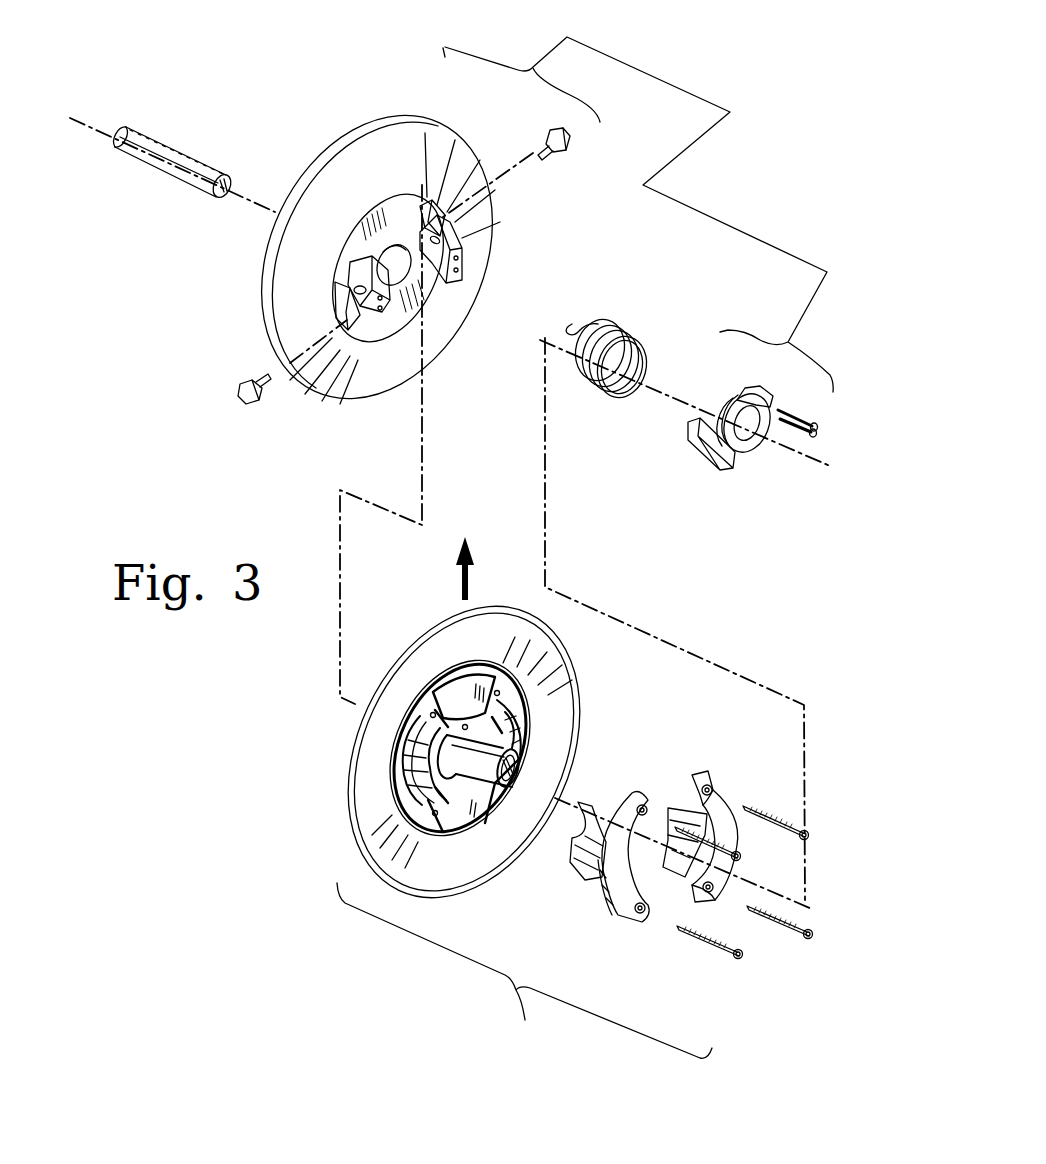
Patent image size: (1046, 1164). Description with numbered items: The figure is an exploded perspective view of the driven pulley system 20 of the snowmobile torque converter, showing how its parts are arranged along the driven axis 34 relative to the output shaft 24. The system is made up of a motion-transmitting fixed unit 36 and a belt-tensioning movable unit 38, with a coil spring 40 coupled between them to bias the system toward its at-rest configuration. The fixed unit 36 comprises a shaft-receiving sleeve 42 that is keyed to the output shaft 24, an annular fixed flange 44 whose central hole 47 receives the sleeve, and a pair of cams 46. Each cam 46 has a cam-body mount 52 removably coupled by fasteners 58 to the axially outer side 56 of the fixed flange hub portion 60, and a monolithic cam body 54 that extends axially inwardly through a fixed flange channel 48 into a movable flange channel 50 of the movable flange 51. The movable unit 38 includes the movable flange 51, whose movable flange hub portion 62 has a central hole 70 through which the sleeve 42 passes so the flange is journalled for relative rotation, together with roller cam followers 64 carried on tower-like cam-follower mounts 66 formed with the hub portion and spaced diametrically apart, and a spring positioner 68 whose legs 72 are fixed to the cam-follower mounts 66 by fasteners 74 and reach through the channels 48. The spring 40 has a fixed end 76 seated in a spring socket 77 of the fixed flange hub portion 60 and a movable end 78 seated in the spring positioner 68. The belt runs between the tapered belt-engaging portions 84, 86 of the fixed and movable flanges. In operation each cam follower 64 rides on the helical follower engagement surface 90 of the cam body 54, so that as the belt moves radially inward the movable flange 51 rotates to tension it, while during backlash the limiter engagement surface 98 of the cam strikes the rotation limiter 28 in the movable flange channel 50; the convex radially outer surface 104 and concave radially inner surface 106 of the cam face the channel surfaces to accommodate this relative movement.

The driven pulley system 20 is at (215, 830).
The output shaft 24 is at (178, 163).
The rotation limiter 28 is at (418, 205).
The driven axis 34 is at (440, 400).
The motion-transmitting fixed unit 36 is at (524, 970).
The belt-tensioning movable unit 38 is at (660, 75).
The coil spring 40 is at (628, 336).
The shaft-receiving sleeve 42 is at (520, 778).
The annular fixed flange 44 is at (463, 752).
The cam 46 is at (667, 847).
The central hole 47 is at (478, 785).
The fixed flange channel 48 is at (522, 745).
The movable flange channel 50 is at (455, 210).
The movable flange 51 is at (337, 122).
The cam-body mount 52 is at (722, 780).
The cam body 54 is at (688, 822).
The axially outer side 56 is at (435, 818).
The fasteners 58 is at (778, 840).
The fixed flange hub portion 60 is at (505, 692).
The movable flange hub portion 62 is at (418, 290).
The cam follower 64 is at (566, 150).
The cam-follower mounts 66 is at (348, 266).
The spring positioner 68 is at (743, 449).
The central hole 70 is at (396, 245).
The legs 72 is at (740, 390).
The fasteners 74 is at (815, 433).
The fixed end 76 is at (575, 326).
The spring socket 77 is at (418, 745).
The movable end 78 is at (632, 340).
The belt-engaging portion 84 is at (442, 646).
The belt-engaging portion 86 is at (358, 382).
The follower engagement surface 90 is at (644, 803).
The limiter engagement surface 98 is at (658, 830).
The convex radially outer surface 104 is at (585, 852).
The concave radially inner surface 106 is at (752, 830).